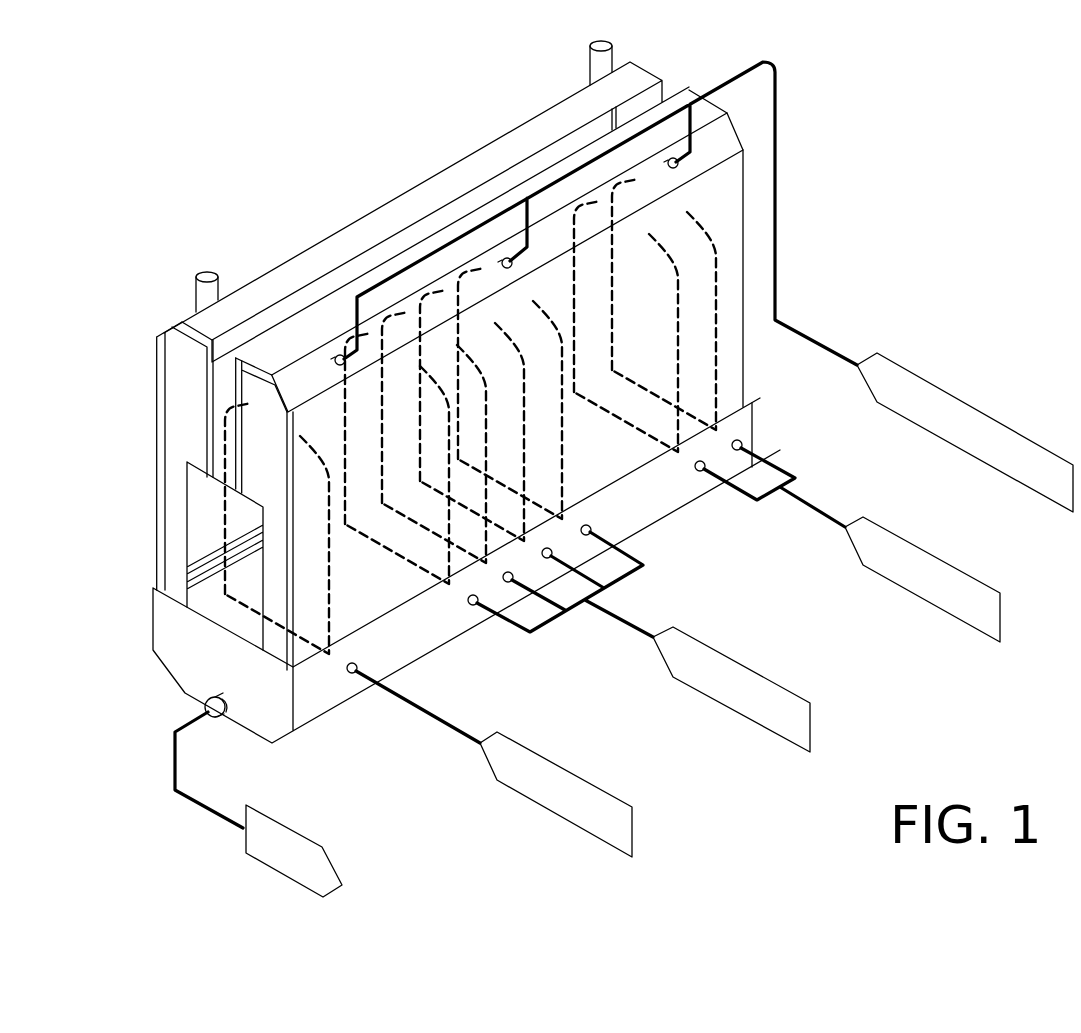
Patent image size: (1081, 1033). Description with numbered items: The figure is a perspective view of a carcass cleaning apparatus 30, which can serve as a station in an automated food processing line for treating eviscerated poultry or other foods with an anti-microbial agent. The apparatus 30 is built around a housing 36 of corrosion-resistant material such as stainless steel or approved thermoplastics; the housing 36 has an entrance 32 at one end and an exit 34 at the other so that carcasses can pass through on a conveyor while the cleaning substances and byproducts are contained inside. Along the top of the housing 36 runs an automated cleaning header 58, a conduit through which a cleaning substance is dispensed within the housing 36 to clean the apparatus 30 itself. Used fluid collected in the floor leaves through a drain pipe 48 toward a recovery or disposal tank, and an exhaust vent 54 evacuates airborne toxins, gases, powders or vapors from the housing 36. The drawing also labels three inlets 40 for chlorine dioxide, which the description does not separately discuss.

The cleaning apparatus 30 is at (762, 262).
The entrance 32 is at (665, 88).
The exit 34 is at (198, 532).
The housing 36 is at (152, 388).
The ClO2 inlet 40 is at (678, 630).
The drain pipe 48 is at (258, 795).
The exhaust vent 54 is at (211, 268).
The automated cleaning header 58 is at (702, 287).